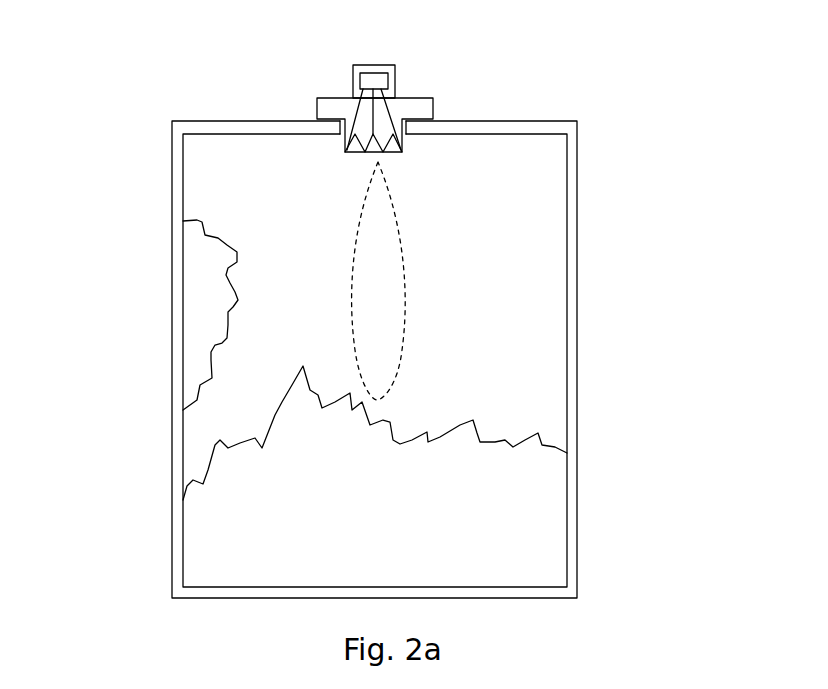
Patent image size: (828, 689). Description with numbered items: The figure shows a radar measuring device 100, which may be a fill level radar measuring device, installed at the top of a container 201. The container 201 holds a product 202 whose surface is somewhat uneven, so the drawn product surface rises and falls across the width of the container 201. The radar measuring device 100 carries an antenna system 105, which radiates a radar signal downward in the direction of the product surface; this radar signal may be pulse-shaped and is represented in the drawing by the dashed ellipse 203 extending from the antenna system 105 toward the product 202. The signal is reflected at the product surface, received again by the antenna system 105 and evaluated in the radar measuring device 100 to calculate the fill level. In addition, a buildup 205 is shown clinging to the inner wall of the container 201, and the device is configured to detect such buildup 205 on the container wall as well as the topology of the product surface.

The radar measuring device 100 is at (395, 87).
The antenna system 105 is at (400, 152).
The container 201 is at (572, 298).
The product 202 is at (538, 517).
The ellipse 203 is at (392, 295).
The buildup 205 is at (198, 289).